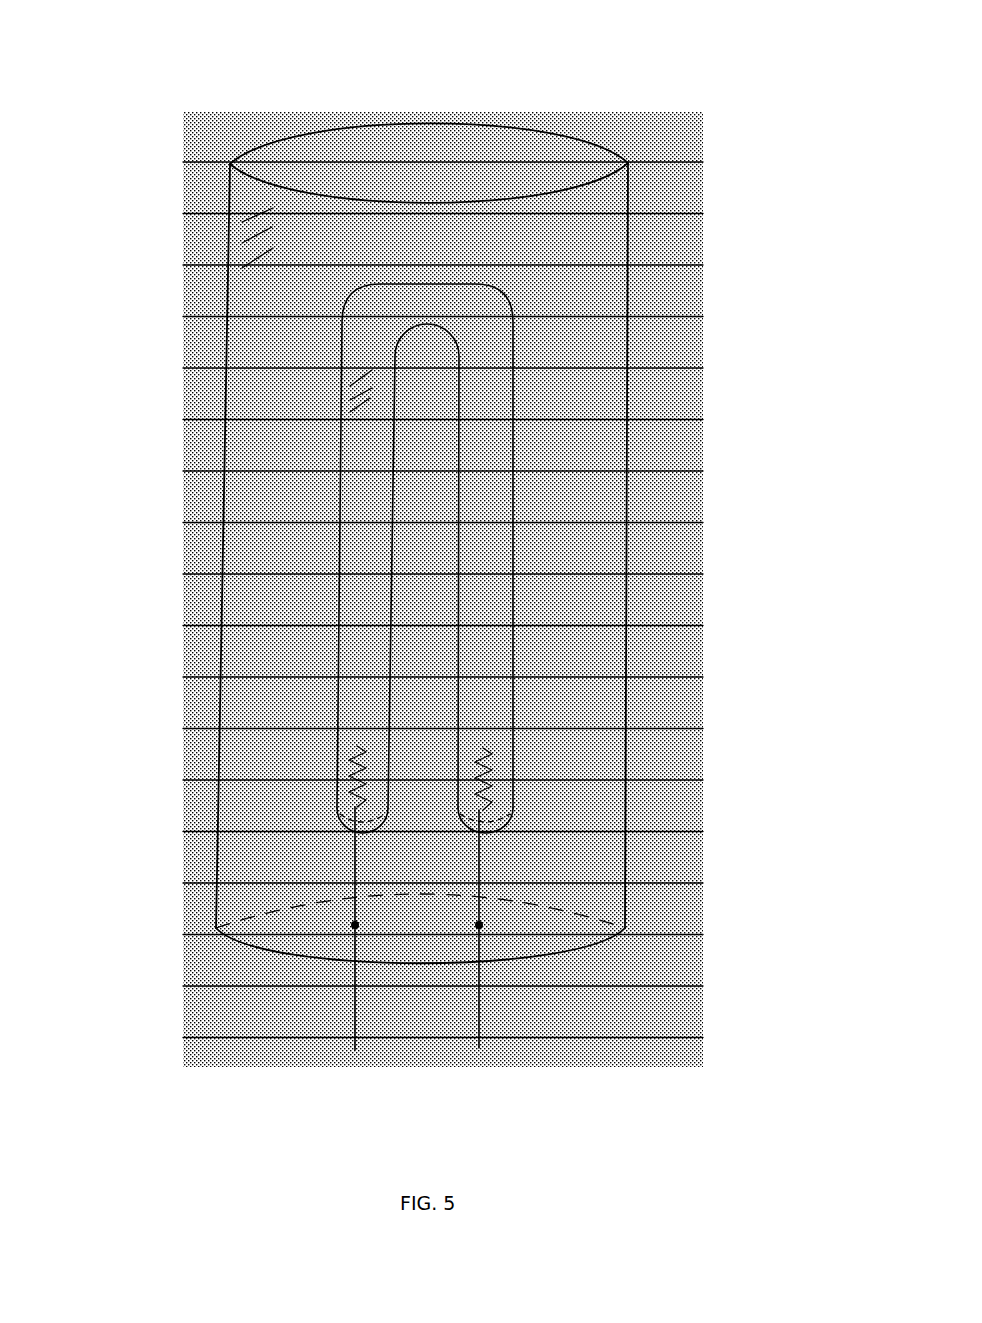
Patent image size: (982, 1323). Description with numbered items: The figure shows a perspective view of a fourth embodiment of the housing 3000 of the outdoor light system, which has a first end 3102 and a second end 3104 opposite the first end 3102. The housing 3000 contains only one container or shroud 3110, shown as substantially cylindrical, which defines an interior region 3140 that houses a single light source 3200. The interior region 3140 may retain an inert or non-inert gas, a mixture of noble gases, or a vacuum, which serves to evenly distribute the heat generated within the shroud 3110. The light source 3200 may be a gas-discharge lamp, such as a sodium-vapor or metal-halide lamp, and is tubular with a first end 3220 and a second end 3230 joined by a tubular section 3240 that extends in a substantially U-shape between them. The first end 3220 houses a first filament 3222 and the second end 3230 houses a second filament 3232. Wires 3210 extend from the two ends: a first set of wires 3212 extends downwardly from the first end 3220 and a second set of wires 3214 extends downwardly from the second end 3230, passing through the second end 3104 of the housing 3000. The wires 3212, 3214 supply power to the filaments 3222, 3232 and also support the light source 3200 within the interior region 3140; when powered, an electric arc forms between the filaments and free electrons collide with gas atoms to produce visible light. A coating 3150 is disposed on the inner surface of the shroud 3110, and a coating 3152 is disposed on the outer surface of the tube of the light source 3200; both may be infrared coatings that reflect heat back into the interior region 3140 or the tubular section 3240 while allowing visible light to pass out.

The housing 3000 is at (439, 620).
The first end 3102 is at (350, 78).
The second end 3104 is at (355, 1173).
The shroud 3110 is at (627, 760).
The interior region 3140 is at (285, 549).
The coating 3150 is at (232, 238).
The coating 3152 is at (340, 387).
The light source 3200 is at (518, 403).
The tubular section 3240 is at (492, 543).
The second end 3230 is at (352, 838).
The first end 3220 is at (490, 838).
The second filament 3232 is at (367, 766).
The first filament 3222 is at (487, 772).
The wires 3210 is at (433, 1006).
The second set of wires 3214 is at (352, 1030).
The first set of wires 3212 is at (480, 1013).